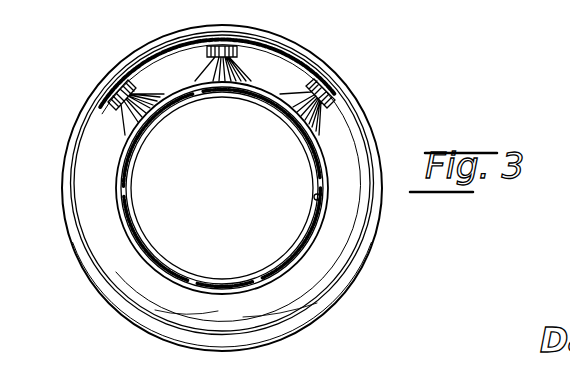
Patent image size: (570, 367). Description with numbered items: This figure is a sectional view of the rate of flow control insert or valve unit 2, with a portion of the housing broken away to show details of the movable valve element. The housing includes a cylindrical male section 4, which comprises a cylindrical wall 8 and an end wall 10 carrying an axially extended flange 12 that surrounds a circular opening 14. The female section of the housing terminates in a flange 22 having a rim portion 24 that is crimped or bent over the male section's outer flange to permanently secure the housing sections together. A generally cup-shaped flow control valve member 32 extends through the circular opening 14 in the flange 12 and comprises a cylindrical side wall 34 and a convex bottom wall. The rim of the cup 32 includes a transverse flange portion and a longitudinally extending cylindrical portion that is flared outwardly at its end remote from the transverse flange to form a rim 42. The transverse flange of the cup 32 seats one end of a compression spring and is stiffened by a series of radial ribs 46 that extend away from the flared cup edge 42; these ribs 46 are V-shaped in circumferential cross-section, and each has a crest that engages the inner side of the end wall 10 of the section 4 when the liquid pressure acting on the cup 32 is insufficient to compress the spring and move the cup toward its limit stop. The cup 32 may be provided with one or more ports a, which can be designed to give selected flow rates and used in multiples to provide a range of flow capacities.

The rate of flow control insert or valve unit 2 is at (86, 69).
The cylindrical male section 4 is at (105, 138).
The cylindrical wall 8 is at (242, 38).
The end wall 10 is at (350, 153).
The axially extended flange 12 is at (198, 292).
The circular opening 14 is at (320, 197).
The flange 22 is at (312, 320).
The rim portion 24 is at (140, 56).
The flow control valve member 32 is at (149, 228).
The cylindrical side wall 34 is at (139, 133).
The rim 42 is at (267, 50).
The radial ribs 46 is at (212, 62).
The ports a is at (128, 178).